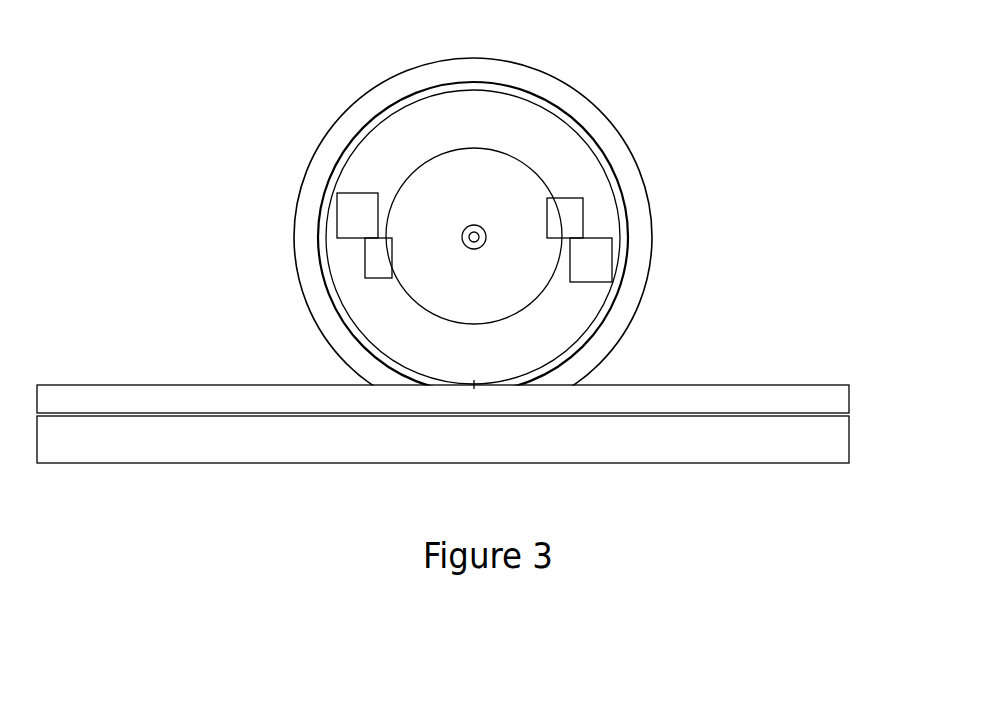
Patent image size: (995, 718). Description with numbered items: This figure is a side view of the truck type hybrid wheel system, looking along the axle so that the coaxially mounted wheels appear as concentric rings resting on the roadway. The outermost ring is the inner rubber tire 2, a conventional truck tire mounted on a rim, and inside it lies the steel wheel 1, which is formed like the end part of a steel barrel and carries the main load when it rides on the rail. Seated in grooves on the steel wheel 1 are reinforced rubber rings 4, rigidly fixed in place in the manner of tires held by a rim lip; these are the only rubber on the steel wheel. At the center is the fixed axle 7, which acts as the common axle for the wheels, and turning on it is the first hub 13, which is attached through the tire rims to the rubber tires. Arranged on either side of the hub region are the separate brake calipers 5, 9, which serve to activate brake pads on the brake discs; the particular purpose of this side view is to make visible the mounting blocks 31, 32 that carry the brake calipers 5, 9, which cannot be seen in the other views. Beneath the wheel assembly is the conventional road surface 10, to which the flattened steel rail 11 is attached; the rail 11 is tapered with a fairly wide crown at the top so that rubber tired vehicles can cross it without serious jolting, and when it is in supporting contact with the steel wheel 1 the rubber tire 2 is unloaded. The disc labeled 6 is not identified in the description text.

The steel wheel 1 is at (542, 115).
The inner rubber tire 2 is at (337, 120).
The rubber rings 4 is at (610, 163).
The brake caliper 5 is at (583, 208).
The wheel disc 6 is at (482, 148).
The fixed axle 7 is at (472, 230).
The brake caliper 9 is at (368, 278).
The road surface 10 is at (807, 412).
The flattened steel rail 11 is at (172, 393).
The first hub 13 is at (465, 248).
The mounting block 31 is at (583, 283).
The mounting block 32 is at (365, 192).